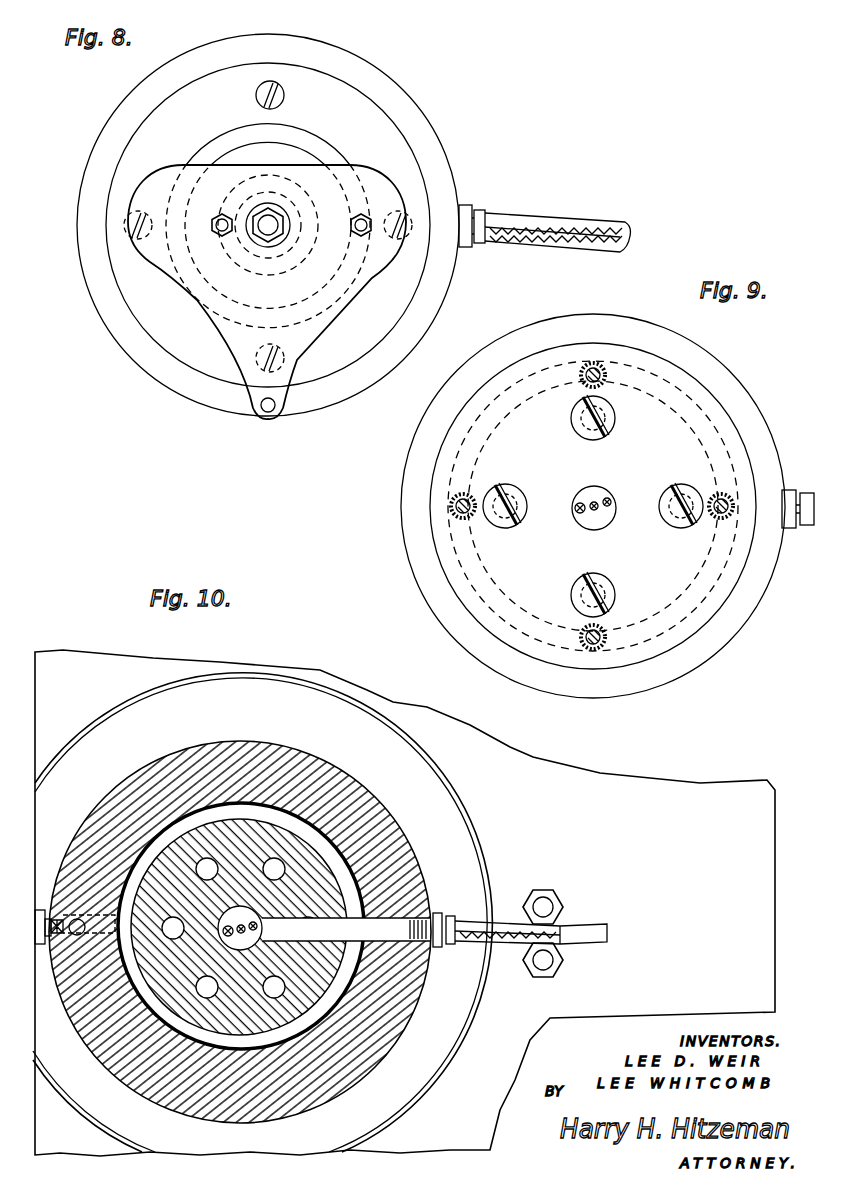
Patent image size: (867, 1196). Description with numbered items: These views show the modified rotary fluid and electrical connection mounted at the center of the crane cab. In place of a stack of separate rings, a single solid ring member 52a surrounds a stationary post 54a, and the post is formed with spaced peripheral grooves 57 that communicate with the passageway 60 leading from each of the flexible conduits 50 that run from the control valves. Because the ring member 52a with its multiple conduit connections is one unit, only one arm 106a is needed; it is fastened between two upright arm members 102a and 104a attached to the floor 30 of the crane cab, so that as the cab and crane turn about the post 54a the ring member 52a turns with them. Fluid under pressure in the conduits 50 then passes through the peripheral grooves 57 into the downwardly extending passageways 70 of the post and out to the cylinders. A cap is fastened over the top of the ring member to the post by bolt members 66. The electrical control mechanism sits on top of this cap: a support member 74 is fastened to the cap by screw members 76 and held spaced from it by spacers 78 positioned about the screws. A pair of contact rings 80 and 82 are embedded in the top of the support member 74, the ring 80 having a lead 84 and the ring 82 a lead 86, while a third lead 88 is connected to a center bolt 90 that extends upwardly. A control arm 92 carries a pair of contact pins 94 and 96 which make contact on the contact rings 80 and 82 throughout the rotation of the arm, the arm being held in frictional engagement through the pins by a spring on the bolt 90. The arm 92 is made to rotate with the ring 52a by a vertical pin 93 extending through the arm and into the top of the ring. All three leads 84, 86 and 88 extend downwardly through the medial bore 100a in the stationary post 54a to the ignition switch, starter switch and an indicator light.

In FIG. 10, the floor 30 is at (728, 990).
In FIG. 8, the flexible conduits 50 is at (540, 214).
In FIG. 9, the flexible conduits 50 is at (808, 528).
In FIG. 10, the flexible conduits 50 is at (525, 955).
In FIG. 8, the solid ring member 52a is at (236, 410).
In FIG. 9, the solid ring member 52a is at (415, 452).
In FIG. 10, the solid ring member 52a is at (175, 750).
In FIG. 10, the stationary post 54a is at (140, 1090).
In FIG. 10, the spaced peripheral grooves 57 is at (355, 885).
In FIG. 10, the passageway 60 is at (400, 918).
In FIG. 9, the bolt members 66 is at (500, 527).
In FIG. 10, the downwardly extending passageways 70 is at (272, 858).
In FIG. 8, the support member 74 is at (408, 150).
In FIG. 8, the screw members 76 is at (256, 95).
In FIG. 9, the screw members 76 is at (605, 372).
In FIG. 9, the spacers 78 is at (590, 365).
In FIG. 8, the contact ring 80 is at (335, 156).
In FIG. 8, the contact ring 82 is at (270, 276).
In FIG. 9, the lead 84 is at (610, 500).
In FIG. 9, the lead 86 is at (594, 502).
In FIG. 9, the third lead 88 is at (577, 504).
In FIG. 8, the center bolt 90 is at (272, 223).
In FIG. 8, the control arm 92 is at (233, 335).
In FIG. 8, the vertical pin 93 is at (272, 410).
In FIG. 8, the contact pin 94 is at (360, 237).
In FIG. 8, the contact pin 96 is at (219, 217).
In FIG. 9, the medial bore 100a is at (596, 530).
In FIG. 10, the medial bore 100a is at (230, 946).
In FIG. 10, the upright arm member 102a is at (543, 970).
In FIG. 10, the upright arm member 104a is at (548, 907).
In FIG. 10, the arm 106a is at (612, 935).